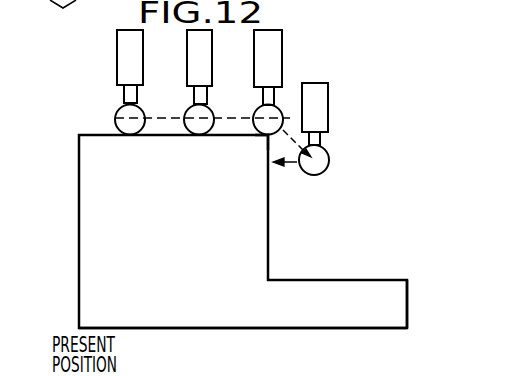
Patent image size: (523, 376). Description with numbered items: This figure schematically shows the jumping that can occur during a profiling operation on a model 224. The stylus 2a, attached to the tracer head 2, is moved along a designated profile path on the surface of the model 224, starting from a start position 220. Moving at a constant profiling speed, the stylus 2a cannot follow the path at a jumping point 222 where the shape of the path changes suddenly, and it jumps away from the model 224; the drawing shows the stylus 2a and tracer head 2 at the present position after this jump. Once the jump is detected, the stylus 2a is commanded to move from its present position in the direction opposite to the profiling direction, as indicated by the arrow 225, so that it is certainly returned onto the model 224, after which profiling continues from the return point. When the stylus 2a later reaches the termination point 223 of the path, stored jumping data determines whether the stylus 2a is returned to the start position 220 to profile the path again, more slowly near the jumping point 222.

The tracer head 2 is at (330, 93).
The stylus 2a is at (330, 155).
The start position 220 is at (79, 134).
The jumping point 222 is at (265, 136).
The termination point 223 is at (407, 279).
The model 224 is at (240, 329).
The arrow 225 is at (292, 163).